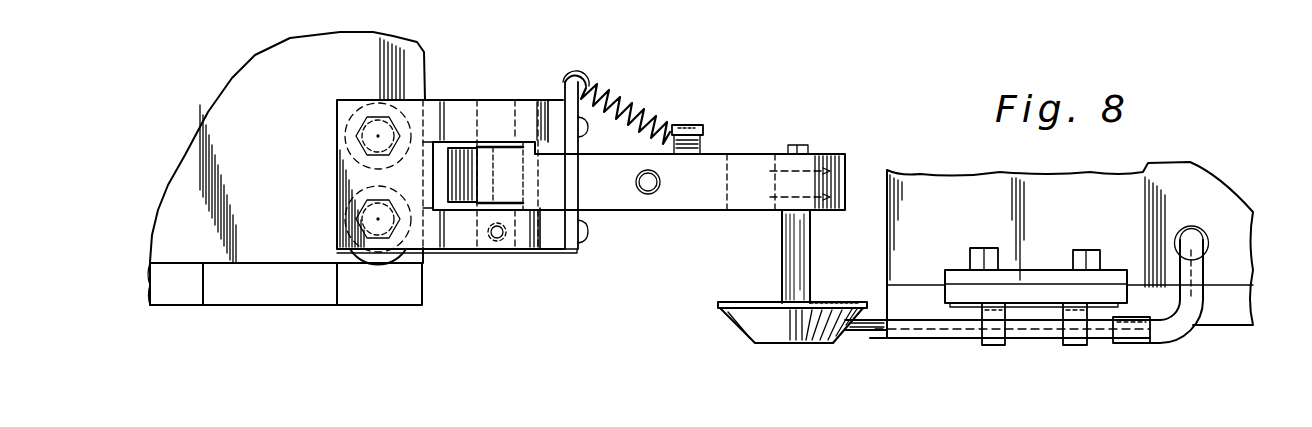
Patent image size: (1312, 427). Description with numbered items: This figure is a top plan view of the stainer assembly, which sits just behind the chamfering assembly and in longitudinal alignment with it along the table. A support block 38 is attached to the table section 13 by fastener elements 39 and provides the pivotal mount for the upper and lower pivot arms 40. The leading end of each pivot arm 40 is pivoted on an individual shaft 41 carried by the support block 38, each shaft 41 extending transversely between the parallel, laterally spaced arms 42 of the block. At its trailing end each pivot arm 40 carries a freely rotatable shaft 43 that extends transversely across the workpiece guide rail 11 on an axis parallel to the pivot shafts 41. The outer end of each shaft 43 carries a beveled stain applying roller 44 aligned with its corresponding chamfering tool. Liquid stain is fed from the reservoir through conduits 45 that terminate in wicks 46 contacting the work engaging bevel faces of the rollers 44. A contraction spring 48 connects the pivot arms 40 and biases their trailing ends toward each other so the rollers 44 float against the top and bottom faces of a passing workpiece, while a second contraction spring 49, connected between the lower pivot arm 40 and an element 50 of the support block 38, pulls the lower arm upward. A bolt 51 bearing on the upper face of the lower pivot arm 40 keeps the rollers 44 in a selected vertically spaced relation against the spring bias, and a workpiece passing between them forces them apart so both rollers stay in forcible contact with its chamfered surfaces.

The workpiece guide rail 11 is at (257, 287).
The table section 13 is at (173, 198).
The support block 38 is at (348, 100).
The fastener elements 39 is at (341, 186).
The pivot arms 40 is at (740, 163).
The pivot shaft 41 is at (492, 114).
The arms of support block 42 is at (440, 112).
The roller shaft 43 is at (810, 238).
The stain applying roller 44 is at (753, 322).
The conduits 45 is at (1018, 328).
The wicks 46 is at (868, 330).
The contraction spring 48 is at (708, 148).
The second contraction spring 49 is at (622, 84).
The element of support block 50 is at (564, 93).
The bolt 51 is at (647, 192).